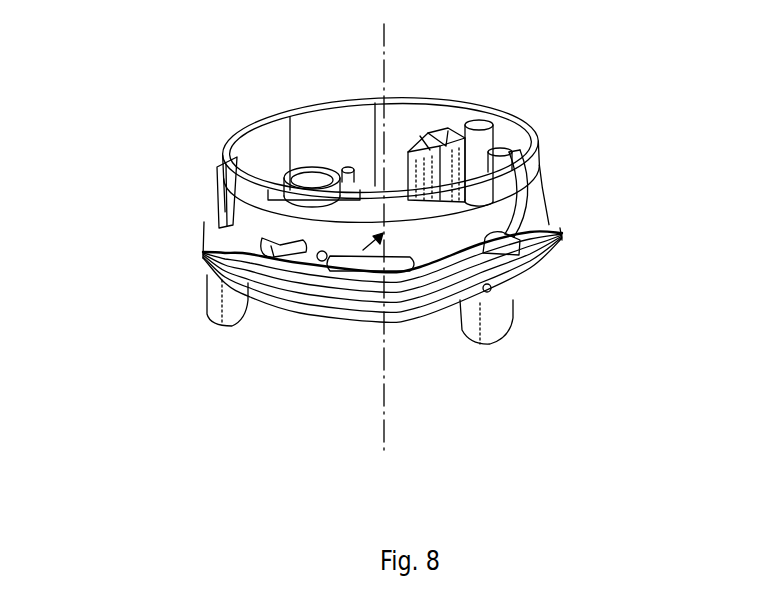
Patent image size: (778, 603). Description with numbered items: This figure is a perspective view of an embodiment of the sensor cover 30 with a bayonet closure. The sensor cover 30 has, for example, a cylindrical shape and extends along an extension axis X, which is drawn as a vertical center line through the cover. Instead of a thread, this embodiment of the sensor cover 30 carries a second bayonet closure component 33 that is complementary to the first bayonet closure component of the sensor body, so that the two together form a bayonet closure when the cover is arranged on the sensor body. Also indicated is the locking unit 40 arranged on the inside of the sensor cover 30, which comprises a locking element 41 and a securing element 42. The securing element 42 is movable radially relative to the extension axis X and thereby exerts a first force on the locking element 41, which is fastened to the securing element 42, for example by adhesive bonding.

The sensor cover 30 is at (261, 93).
The second bayonet closure component 33 is at (282, 240).
The locking unit 40 is at (401, 358).
The locking element 41 is at (318, 260).
The securing element 42 is at (378, 270).
The extension axis X is at (384, 100).